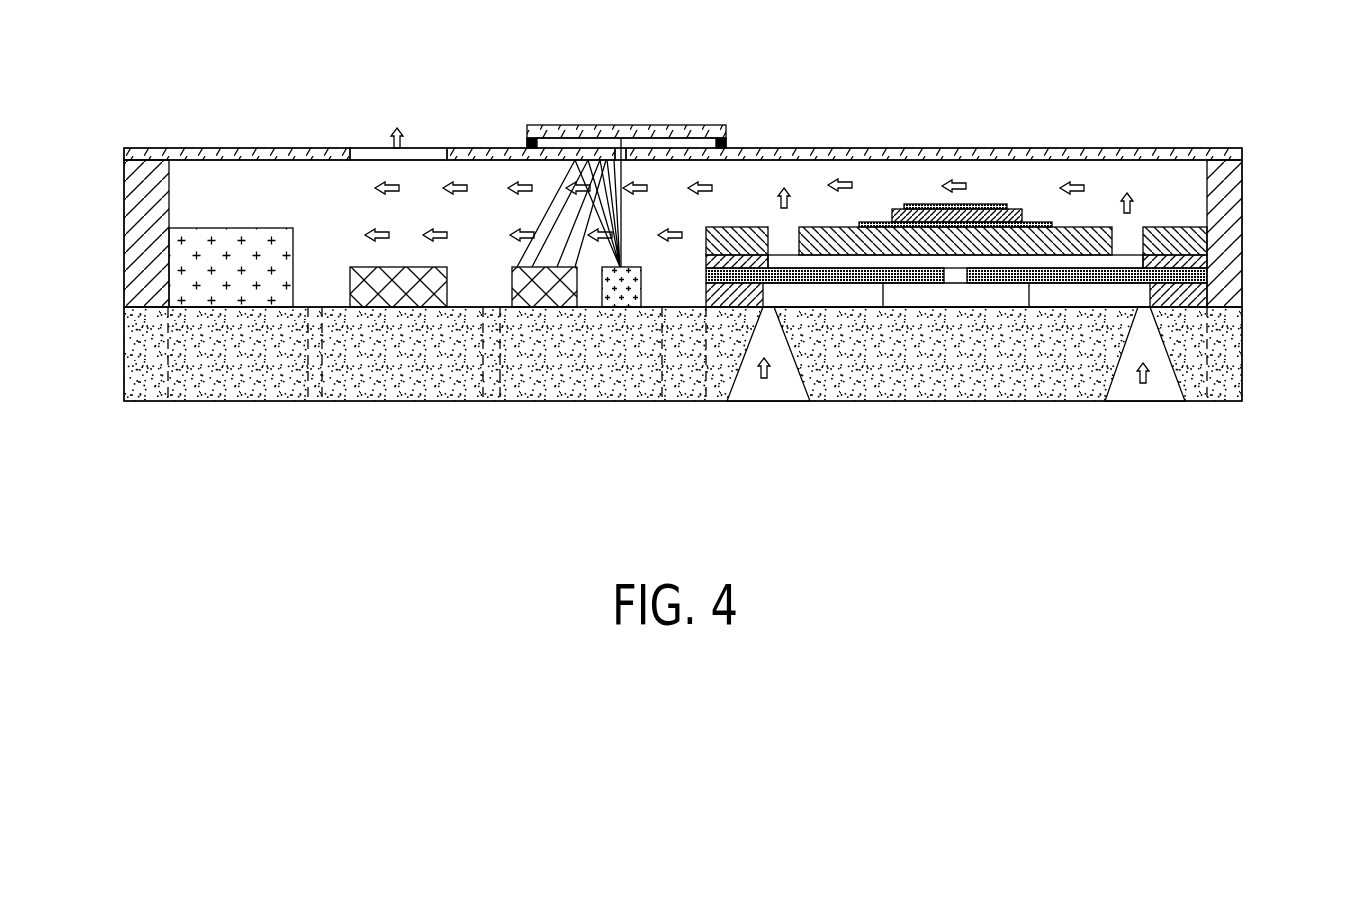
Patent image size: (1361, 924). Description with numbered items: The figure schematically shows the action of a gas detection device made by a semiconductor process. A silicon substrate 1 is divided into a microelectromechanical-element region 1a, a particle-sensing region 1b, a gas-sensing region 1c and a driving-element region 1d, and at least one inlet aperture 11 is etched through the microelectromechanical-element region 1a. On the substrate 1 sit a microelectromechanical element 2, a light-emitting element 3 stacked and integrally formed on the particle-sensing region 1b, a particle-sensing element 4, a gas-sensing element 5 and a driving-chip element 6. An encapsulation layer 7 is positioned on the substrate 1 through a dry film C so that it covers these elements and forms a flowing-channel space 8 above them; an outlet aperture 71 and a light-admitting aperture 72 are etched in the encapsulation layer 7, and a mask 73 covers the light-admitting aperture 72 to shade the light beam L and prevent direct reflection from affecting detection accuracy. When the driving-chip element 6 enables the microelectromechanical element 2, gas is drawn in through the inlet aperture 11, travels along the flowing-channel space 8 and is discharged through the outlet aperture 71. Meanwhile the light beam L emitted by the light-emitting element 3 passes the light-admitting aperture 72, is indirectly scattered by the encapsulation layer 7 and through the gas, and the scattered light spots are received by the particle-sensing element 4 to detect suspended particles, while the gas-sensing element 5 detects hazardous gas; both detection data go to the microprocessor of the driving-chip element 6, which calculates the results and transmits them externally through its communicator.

The substrate 1 is at (1230, 376).
The microelectromechanical-element region 1a is at (707, 370).
The particle-sensing region 1b is at (485, 380).
The gas-sensing region 1c is at (320, 380).
The driving-element region 1d is at (168, 382).
The inlet aperture 11 is at (778, 383).
The microelectromechanical element 2 is at (1207, 238).
The light-emitting element 3 is at (640, 275).
The particle-sensing element 4 is at (527, 272).
The gas-sensing element 5 is at (387, 287).
The driving-chip element 6 is at (238, 238).
The encapsulation layer 7 is at (1222, 160).
The outlet aperture 71 is at (422, 148).
The light-admitting aperture 72 is at (624, 165).
The mask 73 is at (724, 128).
The flowing-channel space 8 is at (822, 178).
The light beam L is at (618, 178).
The dry film C is at (152, 253).